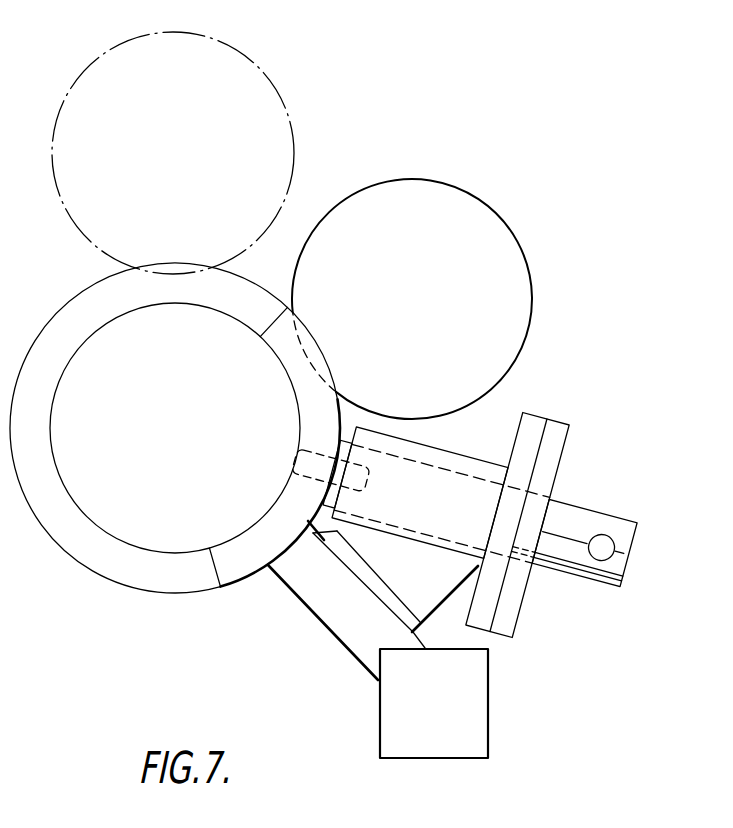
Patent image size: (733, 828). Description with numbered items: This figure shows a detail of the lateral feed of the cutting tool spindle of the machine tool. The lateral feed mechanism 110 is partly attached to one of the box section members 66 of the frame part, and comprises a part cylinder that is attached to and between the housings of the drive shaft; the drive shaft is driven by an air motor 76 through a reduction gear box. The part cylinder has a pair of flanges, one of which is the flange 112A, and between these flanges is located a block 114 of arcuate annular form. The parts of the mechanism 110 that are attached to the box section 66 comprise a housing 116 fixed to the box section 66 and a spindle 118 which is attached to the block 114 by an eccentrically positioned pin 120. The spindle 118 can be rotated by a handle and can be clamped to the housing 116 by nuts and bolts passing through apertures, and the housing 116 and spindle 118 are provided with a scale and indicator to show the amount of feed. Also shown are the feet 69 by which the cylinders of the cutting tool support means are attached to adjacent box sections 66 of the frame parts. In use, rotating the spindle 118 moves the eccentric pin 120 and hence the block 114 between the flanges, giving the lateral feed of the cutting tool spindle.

The air motor 76 is at (301, 215).
The flange 112A is at (173, 456).
The block 114 is at (274, 474).
The lateral feed mechanism 110 is at (463, 451).
The housing 116 is at (517, 502).
The spindle 118 is at (584, 524).
The eccentrically positioned pin 120 is at (294, 447).
The feet 69 is at (373, 600).
The box section member 66 is at (434, 727).